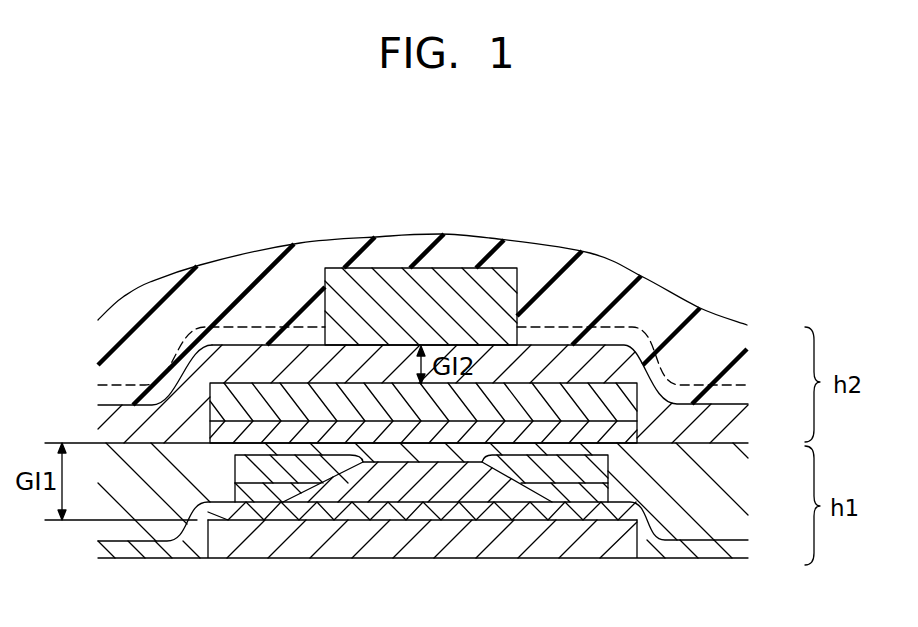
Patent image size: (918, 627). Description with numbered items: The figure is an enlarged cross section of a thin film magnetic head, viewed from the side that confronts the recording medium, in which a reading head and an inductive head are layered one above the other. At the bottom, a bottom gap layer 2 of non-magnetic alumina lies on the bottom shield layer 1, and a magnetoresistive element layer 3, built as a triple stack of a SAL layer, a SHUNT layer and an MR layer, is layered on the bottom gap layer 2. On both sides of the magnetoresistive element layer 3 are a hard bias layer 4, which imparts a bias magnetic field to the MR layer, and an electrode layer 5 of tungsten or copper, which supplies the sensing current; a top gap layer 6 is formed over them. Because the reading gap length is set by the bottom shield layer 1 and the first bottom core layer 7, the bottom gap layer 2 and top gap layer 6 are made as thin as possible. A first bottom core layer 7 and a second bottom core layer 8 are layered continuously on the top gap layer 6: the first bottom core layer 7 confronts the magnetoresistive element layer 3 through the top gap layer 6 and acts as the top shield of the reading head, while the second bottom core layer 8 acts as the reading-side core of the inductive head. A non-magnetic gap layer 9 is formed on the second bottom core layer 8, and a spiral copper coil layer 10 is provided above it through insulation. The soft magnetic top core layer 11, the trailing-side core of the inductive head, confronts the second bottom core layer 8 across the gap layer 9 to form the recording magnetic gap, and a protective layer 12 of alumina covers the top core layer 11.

The bottom shield layer 1 is at (538, 547).
The bottom gap layer 2 is at (738, 546).
The magnetoresistive element layer 3 is at (440, 486).
The hard bias layer 4 is at (600, 494).
The electrode layer 5 is at (600, 472).
The top gap layer 6 is at (728, 457).
The first bottom core layer 7 is at (614, 405).
The second bottom core layer 8 is at (650, 397).
The gap layer 9 is at (123, 420).
The coil layer 10 is at (282, 327).
The top core layer 11 is at (454, 278).
The protective layer 12 is at (368, 244).